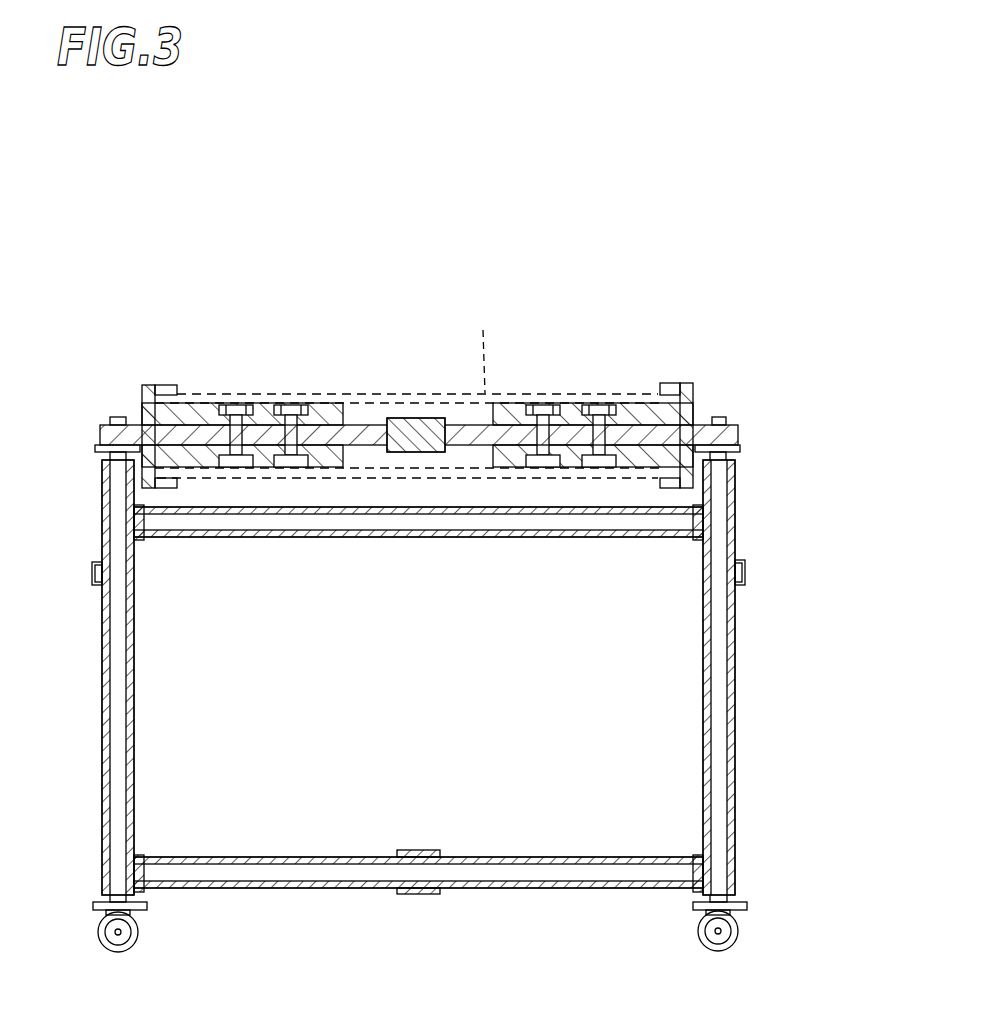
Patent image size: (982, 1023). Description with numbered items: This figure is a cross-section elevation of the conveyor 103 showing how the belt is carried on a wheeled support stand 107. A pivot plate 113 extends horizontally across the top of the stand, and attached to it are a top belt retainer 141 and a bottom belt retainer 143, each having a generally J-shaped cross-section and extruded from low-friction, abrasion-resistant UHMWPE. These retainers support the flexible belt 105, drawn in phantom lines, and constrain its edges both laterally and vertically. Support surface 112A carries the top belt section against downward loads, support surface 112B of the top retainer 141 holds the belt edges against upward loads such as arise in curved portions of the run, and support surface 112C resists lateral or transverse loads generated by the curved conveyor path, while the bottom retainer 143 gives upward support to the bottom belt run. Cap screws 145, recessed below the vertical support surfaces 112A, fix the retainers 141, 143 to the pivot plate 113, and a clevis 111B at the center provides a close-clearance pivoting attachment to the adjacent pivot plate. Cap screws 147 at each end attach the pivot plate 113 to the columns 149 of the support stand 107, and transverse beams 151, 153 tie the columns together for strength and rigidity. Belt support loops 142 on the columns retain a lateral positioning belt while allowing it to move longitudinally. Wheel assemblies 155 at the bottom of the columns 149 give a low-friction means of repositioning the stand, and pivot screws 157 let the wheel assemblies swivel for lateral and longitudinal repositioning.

The linear array assembly 103 is at (487, 275).
The flexible belt 105 is at (485, 349).
The support stand 107 is at (765, 662).
The clevis 111B is at (425, 418).
The support surface 112A is at (207, 403).
The support surface 112B is at (182, 398).
The support surface 112C is at (655, 397).
The pivot plate 113 is at (735, 436).
The top belt retainer 141 is at (698, 398).
The belt support loop 142 is at (745, 575).
The bottom belt retainer 143 is at (677, 491).
The cap screw 145 is at (545, 405).
The cap screw 147 is at (115, 417).
The column 149 is at (102, 698).
The transverse beam 151 is at (537, 857).
The transverse beam 153 is at (493, 538).
The wheel assembly 155 is at (167, 923).
The pivot screw 157 is at (735, 877).